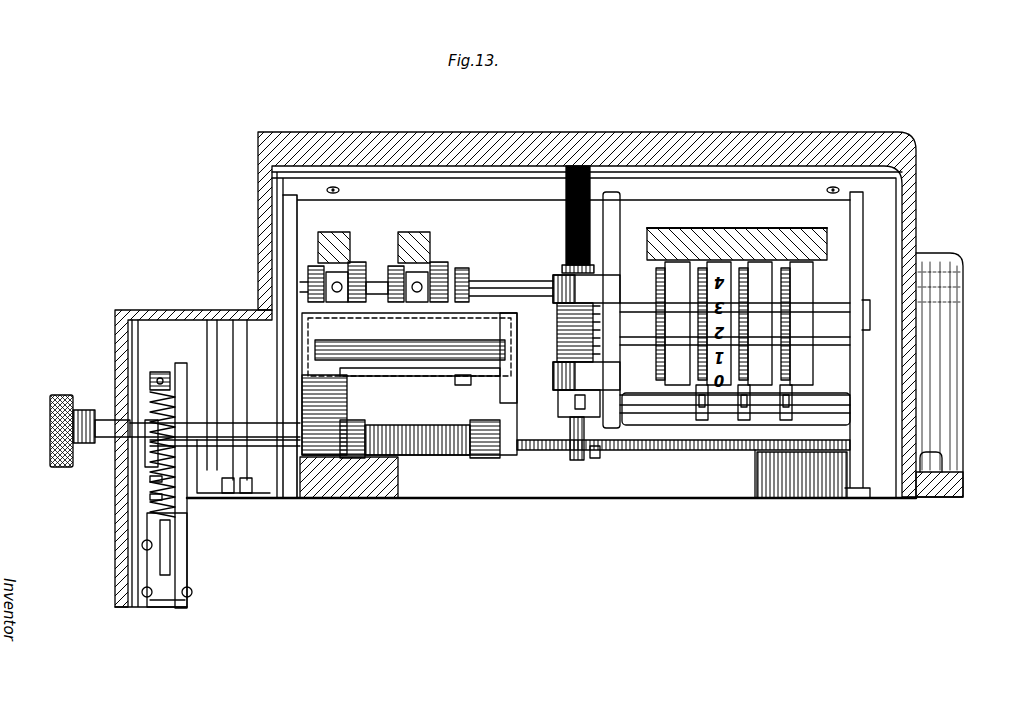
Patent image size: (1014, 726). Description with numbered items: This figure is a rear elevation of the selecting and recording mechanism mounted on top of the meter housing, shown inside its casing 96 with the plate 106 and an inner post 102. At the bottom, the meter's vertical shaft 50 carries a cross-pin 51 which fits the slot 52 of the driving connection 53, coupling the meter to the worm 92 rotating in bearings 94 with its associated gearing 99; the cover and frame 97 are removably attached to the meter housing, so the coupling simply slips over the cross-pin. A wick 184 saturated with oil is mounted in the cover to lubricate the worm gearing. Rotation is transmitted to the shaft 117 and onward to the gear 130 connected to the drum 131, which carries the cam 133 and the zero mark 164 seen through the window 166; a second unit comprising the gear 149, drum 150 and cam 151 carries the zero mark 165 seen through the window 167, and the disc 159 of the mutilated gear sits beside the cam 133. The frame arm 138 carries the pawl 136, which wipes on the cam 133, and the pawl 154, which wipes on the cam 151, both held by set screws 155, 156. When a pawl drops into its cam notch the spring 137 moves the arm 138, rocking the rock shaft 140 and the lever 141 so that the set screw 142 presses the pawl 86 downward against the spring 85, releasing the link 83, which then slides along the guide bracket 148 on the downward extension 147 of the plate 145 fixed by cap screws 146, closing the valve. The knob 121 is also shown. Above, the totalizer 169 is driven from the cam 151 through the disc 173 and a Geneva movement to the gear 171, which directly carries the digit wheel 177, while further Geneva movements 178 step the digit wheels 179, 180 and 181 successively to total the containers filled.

The casing 96 is at (622, 132).
The plate 106 is at (288, 237).
The wick 184 is at (565, 236).
The post 102 is at (620, 232).
The bearings 94 is at (556, 288).
The worm 92 is at (560, 355).
The ratchet 99 is at (560, 372).
The cross-pin 51 is at (590, 440).
The vertical shaft 50 is at (583, 460).
The slot 52 is at (594, 458).
The driving connection 53 is at (575, 442).
The digit wheel 179 is at (726, 262).
The digit wheel 180 is at (766, 262).
The digit wheel 177 is at (680, 390).
The totalizer 169 is at (760, 392).
The digit wheel 181 is at (815, 386).
The Geneva gear movements 178 is at (703, 420).
The frame 97 is at (772, 498).
The zero mark 164 is at (325, 265).
The zero mark 165 is at (410, 255).
The gear 130 is at (318, 272).
The drum 131 is at (300, 290).
The window 166 is at (337, 275).
The set screw 155 is at (353, 287).
The drum 150 is at (395, 285).
The cam 133 is at (350, 315).
The set screw 156 is at (432, 277).
The window 167 is at (432, 262).
The cam 151 is at (455, 270).
The gear 171 is at (478, 282).
The pawl 136 is at (409, 384).
The pawl 154 is at (498, 358).
The frame arm 138 is at (415, 330).
The gear 149 is at (395, 350).
The disc 159 is at (324, 415).
The disc 173 is at (465, 378).
The spring 137 is at (440, 455).
The knob 121 is at (58, 396).
The shaft 117 is at (103, 422).
The plate 145 is at (185, 370).
The downward extension 147 is at (188, 560).
The link 83 is at (163, 542).
The pawl 86 is at (152, 492).
The lever 141 is at (148, 455).
The spring 85 is at (150, 480).
The set screw 142 is at (152, 497).
The rock shaft 140 is at (197, 480).
The cap screws 146 is at (232, 492).
The guide bracket 148 is at (165, 600).